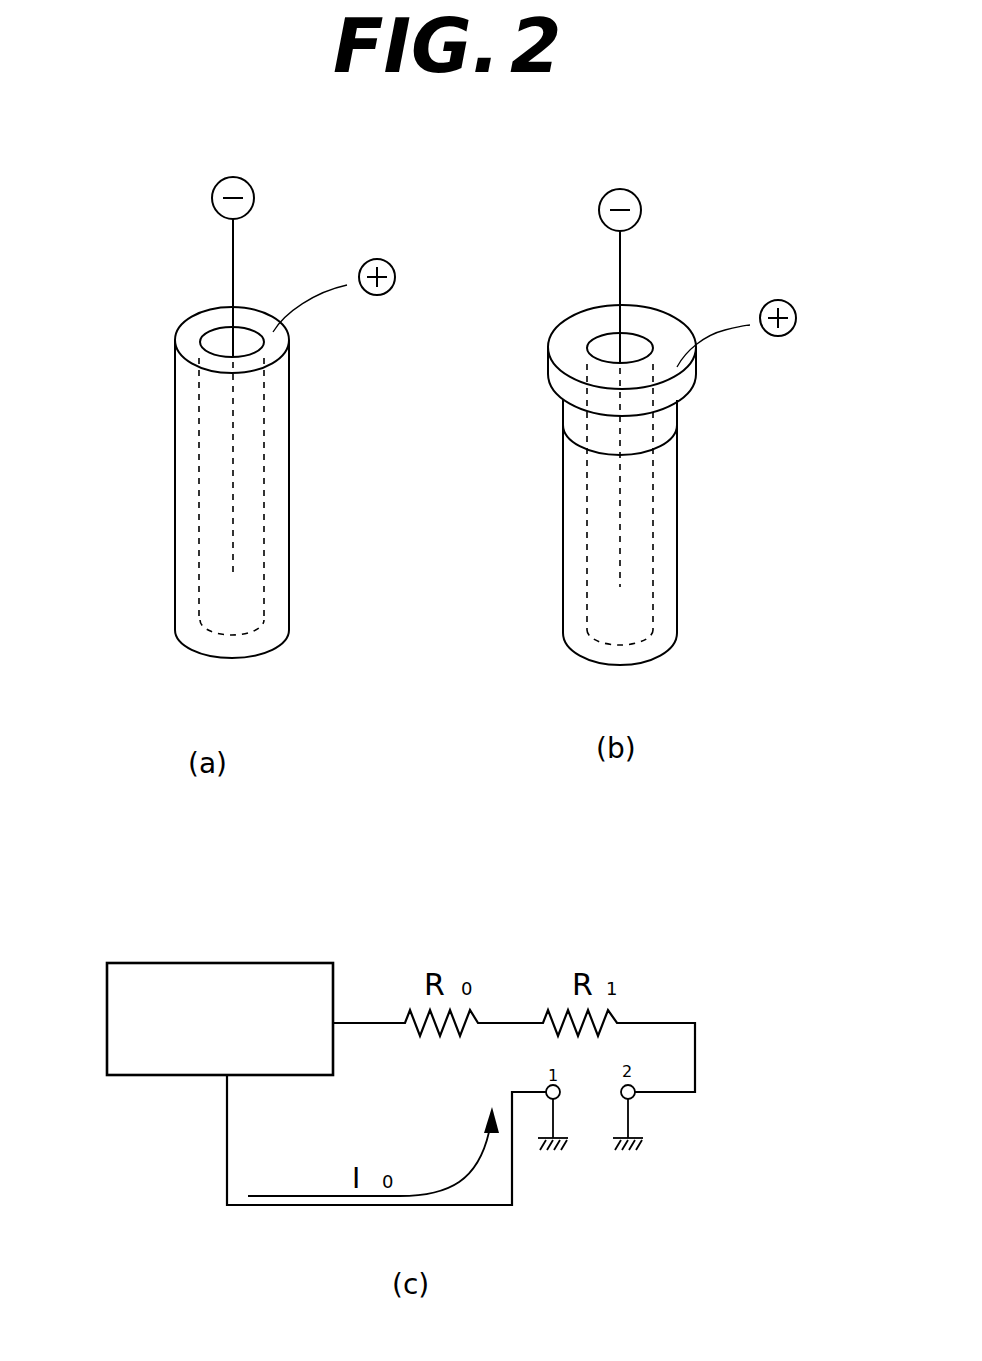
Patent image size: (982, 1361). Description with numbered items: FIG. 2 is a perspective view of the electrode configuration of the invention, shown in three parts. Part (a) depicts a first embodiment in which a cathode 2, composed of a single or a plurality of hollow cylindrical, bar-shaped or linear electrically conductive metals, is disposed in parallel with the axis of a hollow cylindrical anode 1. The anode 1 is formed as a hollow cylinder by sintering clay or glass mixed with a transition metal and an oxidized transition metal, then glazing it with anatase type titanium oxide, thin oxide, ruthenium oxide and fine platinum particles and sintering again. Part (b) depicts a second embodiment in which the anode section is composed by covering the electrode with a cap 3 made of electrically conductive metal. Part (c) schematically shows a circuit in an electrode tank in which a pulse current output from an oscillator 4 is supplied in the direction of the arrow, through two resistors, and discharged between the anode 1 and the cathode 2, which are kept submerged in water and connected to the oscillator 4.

The anode 1 is at (278, 487).
The cathode 2 is at (232, 277).
The cap 3 is at (663, 375).
The oscillator 4 is at (278, 963).